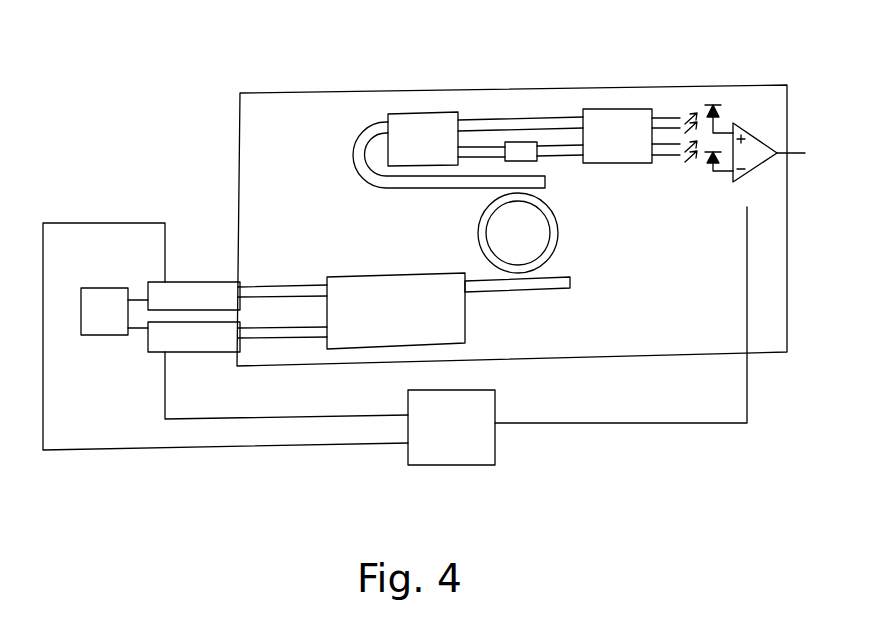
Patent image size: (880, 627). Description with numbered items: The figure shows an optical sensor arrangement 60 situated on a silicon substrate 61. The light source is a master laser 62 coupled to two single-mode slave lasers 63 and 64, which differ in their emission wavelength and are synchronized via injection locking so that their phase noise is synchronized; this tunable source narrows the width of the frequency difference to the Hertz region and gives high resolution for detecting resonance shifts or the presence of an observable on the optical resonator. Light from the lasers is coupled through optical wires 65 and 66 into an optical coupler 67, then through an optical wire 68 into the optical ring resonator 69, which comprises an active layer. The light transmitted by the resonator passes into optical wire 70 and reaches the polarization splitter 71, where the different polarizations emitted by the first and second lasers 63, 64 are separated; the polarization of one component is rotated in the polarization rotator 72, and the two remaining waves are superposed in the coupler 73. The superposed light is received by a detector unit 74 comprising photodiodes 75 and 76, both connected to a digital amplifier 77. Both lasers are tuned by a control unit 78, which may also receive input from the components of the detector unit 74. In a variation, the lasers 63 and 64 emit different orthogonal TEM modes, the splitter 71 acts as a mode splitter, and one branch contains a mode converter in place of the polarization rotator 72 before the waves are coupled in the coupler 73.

The optical sensor arrangement 60 is at (517, 58).
The silicon substrate 61 is at (338, 91).
The master laser 62 is at (106, 287).
The first slave laser 63 is at (197, 281).
The second slave laser 64 is at (187, 353).
The optical wire 65 is at (297, 285).
The optical wire 66 is at (258, 328).
The optical coupler 67 is at (395, 275).
The optical wire 68 is at (500, 292).
The optical ring resonator 69 is at (558, 236).
The optical wire 70 is at (462, 190).
The polarization splitter 71 is at (437, 111).
The polarization rotator 72 is at (530, 162).
The coupler 73 is at (637, 164).
The detector unit 74 is at (763, 100).
The photodiode 75 is at (705, 103).
The photodiode 76 is at (710, 175).
The digital amplifier 77 is at (752, 172).
The control unit 78 is at (496, 405).